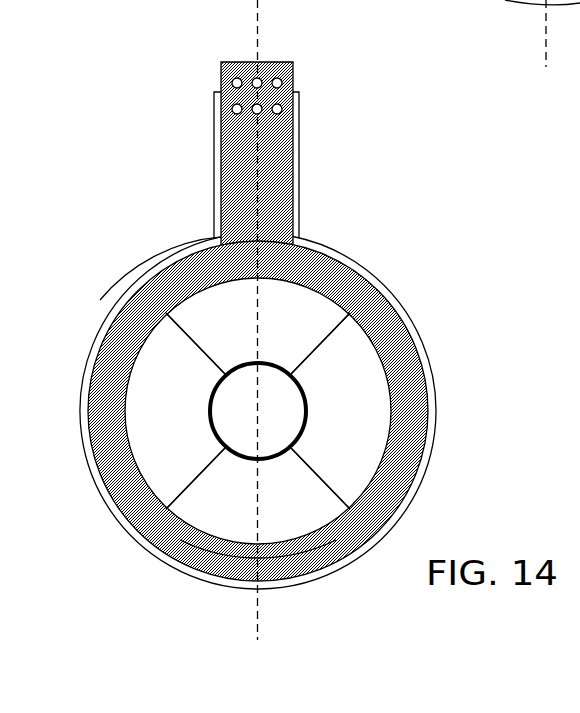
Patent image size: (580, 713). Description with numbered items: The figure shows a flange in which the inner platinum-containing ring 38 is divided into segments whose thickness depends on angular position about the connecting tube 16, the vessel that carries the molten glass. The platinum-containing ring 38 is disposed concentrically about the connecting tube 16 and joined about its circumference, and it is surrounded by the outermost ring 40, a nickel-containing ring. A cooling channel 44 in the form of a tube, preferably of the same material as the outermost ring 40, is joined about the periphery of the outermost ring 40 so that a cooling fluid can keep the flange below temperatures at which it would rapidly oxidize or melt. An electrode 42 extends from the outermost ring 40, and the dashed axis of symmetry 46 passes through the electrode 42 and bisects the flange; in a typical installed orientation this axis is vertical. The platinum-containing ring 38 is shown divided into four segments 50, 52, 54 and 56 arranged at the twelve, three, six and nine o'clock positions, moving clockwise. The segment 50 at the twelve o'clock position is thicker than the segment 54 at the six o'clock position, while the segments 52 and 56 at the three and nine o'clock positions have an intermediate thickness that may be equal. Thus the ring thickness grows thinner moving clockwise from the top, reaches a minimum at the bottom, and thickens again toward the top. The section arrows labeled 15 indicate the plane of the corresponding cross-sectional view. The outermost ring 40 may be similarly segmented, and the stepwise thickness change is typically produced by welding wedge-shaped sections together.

The section line 15 is at (273, 11).
The connecting tube 16 is at (284, 473).
The platinum-containing ring 38 is at (346, 252).
The outermost ring 40 is at (372, 308).
The electrode 42 is at (293, 76).
The cooling channel 44 is at (167, 258).
The axis of symmetry 46 is at (262, 605).
The segment 50 is at (210, 313).
The segment 52 is at (372, 388).
The segment 54 is at (198, 520).
The segment 56 is at (150, 438).